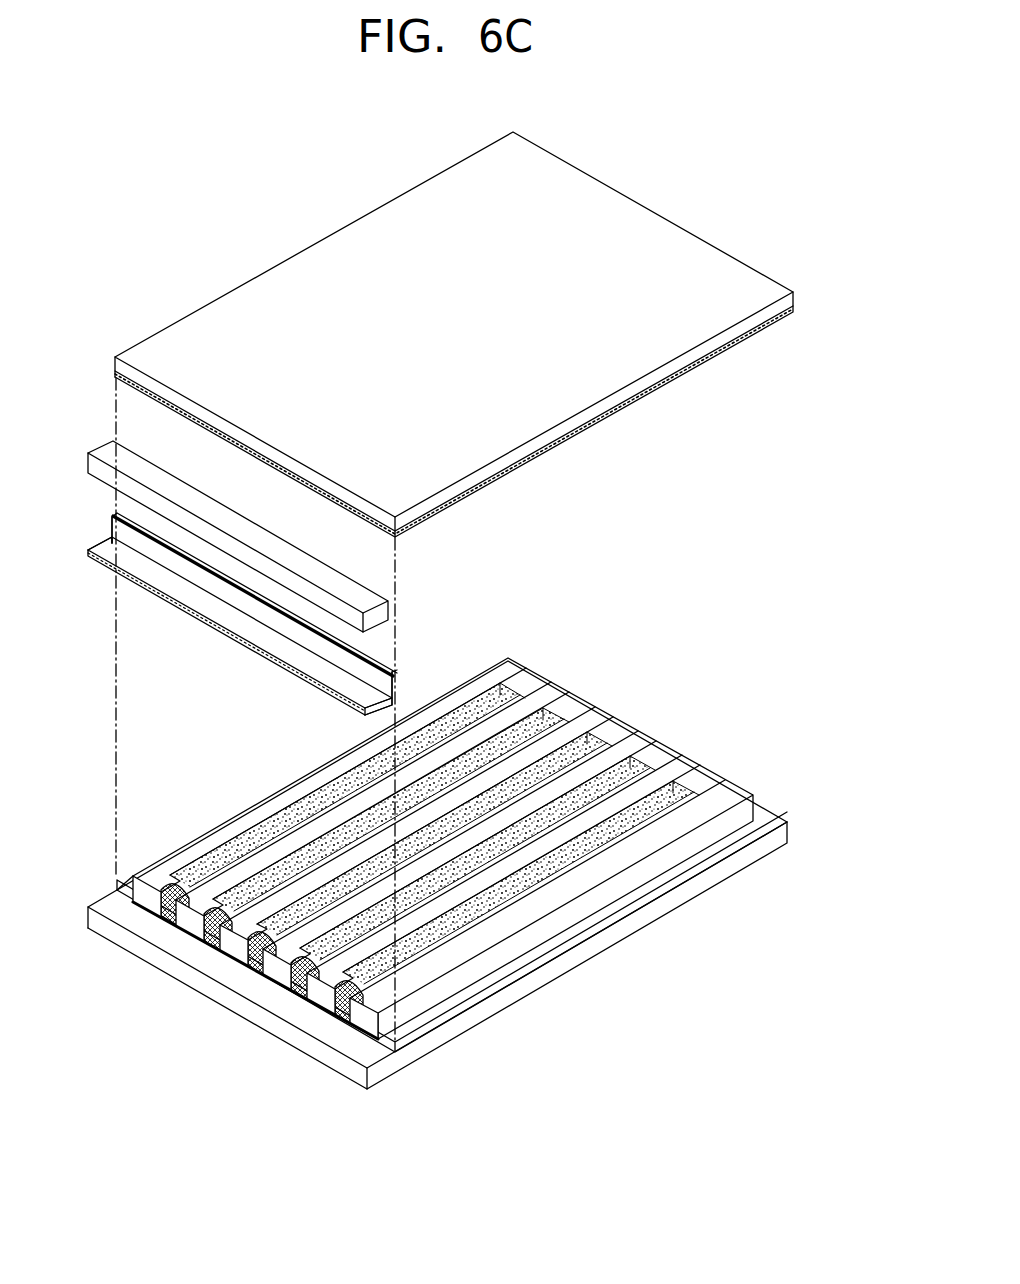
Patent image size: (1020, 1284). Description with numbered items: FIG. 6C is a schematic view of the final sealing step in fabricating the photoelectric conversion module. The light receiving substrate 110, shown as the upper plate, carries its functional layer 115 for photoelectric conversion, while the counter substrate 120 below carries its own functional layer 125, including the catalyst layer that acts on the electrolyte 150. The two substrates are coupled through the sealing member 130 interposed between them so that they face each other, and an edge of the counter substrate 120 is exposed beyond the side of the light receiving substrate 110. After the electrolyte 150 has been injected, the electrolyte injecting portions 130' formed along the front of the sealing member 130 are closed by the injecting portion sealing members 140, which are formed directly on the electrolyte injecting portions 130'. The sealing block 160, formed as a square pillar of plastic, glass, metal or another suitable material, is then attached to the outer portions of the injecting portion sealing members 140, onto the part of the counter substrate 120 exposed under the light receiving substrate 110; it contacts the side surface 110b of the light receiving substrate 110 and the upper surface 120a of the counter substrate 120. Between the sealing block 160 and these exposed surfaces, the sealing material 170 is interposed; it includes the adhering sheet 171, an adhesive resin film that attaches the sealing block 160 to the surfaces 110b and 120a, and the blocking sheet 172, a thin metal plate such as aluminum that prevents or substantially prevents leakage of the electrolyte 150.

The light receiving substrate 110 is at (657, 174).
The side surface of the light receiving substrate 110b is at (258, 440).
The functional layer 115 is at (596, 427).
The sealing block 160 is at (393, 610).
The sealing material 170 is at (474, 617).
The adhering sheet 171 is at (396, 664).
The blocking sheet 172 is at (396, 680).
The counter substrate 120 is at (488, 1015).
The upper surface of the counter substrate 120a is at (313, 1021).
The functional layer 125 is at (522, 978).
The sealing member 130 is at (435, 848).
The electrolyte injecting portions 130' is at (255, 957).
The injecting portion sealing members 140 is at (163, 914).
The electrolyte 150 is at (574, 712).